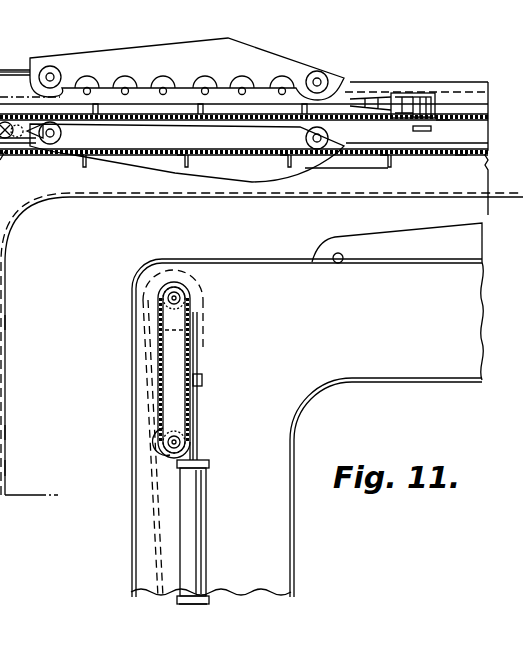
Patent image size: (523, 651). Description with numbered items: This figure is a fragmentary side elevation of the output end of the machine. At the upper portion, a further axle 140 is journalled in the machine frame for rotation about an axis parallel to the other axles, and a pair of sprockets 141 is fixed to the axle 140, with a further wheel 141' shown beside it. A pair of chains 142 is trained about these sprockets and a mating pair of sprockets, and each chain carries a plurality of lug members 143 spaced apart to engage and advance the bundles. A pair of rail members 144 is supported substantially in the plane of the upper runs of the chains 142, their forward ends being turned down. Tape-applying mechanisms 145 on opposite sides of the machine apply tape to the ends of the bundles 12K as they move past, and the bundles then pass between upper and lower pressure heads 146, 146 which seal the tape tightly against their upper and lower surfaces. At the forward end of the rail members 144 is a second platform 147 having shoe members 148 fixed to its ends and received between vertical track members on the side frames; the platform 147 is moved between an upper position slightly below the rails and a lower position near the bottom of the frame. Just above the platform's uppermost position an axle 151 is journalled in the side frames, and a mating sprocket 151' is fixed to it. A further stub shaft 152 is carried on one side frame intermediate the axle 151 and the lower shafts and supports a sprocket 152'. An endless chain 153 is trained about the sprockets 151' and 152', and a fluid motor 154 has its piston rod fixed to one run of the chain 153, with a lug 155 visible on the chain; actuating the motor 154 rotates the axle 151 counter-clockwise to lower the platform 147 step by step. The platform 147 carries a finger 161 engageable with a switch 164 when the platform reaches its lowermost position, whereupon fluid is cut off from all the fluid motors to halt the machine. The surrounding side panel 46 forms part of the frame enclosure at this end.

The bundles 12K is at (10, 73).
The axle 140 is at (12, 135).
The sprockets 141 is at (39, 151).
The idler wheel 141' is at (7, 170).
The chains 142 is at (461, 155).
The lug members 143 is at (350, 168).
The rail members 144 is at (443, 118).
The tape-applying mechanisms 145 is at (367, 97).
The pressure heads 146 is at (272, 58).
The second platform 147 is at (5, 433).
The shoe members 148 is at (5, 265).
The axle 151 is at (204, 292).
The sprocket 151' is at (209, 314).
The stub shaft 152 is at (203, 442).
The sprocket 152' is at (201, 428).
The endless chain 153 is at (192, 337).
The fluid motor 154 is at (205, 510).
The chain lug 155 is at (206, 377).
The finger 161 is at (5, 324).
The switch 164 is at (5, 469).
The panel 46 is at (283, 522).